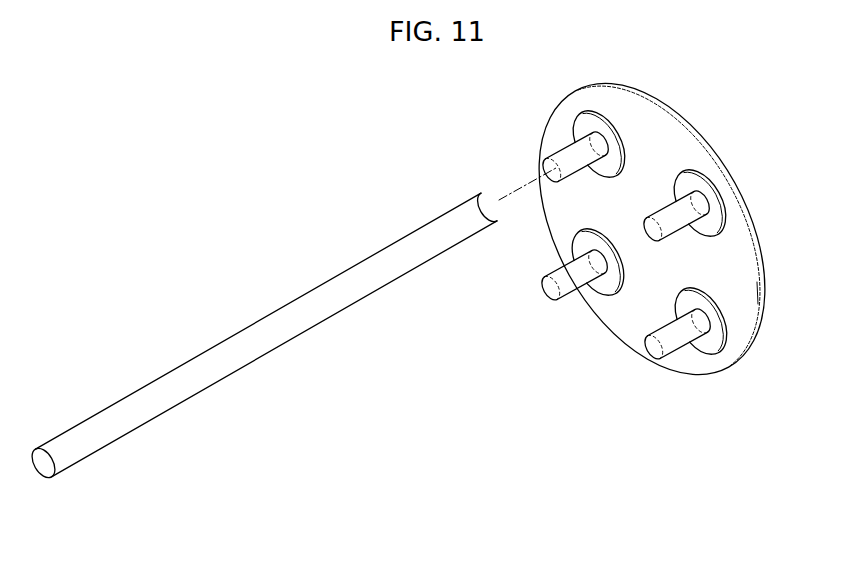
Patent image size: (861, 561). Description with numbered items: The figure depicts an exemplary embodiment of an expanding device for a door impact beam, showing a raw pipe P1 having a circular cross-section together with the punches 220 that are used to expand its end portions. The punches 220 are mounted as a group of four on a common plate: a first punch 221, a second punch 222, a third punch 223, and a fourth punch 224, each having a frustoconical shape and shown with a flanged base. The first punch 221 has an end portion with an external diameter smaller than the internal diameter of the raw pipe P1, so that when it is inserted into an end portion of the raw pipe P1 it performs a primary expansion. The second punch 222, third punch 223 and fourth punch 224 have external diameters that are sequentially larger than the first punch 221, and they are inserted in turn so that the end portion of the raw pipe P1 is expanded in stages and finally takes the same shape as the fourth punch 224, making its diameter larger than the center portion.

The raw pipe P1 is at (302, 306).
The punches 220 is at (656, 296).
The first punch 221 is at (565, 152).
The second punch 222 is at (700, 205).
The third punch 223 is at (680, 343).
The fourth punch 224 is at (572, 287).